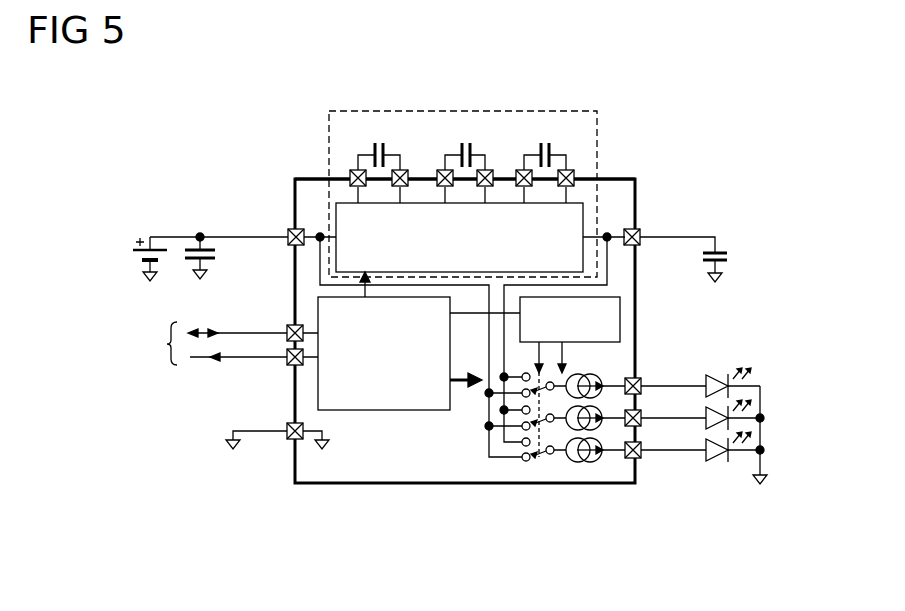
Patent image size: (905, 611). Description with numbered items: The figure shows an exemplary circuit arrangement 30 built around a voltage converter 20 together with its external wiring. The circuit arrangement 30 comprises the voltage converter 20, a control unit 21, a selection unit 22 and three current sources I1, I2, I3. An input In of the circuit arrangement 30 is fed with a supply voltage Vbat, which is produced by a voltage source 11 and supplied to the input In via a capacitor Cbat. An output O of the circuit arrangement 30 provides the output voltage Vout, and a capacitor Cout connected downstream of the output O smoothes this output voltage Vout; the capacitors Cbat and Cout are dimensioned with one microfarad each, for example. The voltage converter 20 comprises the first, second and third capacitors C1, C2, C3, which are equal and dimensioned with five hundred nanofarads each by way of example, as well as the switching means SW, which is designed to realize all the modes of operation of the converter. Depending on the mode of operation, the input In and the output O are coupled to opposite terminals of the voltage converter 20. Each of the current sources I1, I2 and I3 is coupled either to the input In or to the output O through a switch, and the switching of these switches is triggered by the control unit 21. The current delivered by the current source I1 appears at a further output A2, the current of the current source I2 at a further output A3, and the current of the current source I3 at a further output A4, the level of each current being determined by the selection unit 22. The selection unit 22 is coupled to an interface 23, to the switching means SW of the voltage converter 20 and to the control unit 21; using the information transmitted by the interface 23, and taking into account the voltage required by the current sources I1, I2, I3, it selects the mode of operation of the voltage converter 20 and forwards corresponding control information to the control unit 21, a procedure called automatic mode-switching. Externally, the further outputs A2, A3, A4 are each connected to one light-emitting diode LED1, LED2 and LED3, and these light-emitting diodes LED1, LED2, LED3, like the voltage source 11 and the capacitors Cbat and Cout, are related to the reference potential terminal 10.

The reference potential terminal 10 is at (151, 280).
The voltage source 11 is at (132, 249).
The voltage converter 20 is at (485, 194).
The control unit 21 is at (619, 306).
The selection unit 22 is at (318, 394).
The interface 23 is at (220, 343).
The circuit arrangement 30 is at (406, 506).
The switching means SW is at (575, 210).
The output O is at (632, 228).
The input In is at (290, 229).
The first capacitor C1 is at (379, 144).
The second capacitor C2 is at (465, 144).
The third capacitor C3 is at (545, 144).
The supply voltage Vbat is at (219, 226).
The capacitor Cbat is at (224, 253).
The output voltage Vout is at (677, 233).
The capacitor Cout is at (718, 252).
The current source I1 is at (576, 376).
The current source I2 is at (593, 408).
The current source I3 is at (587, 464).
The further output A2 is at (634, 378).
The further output A3 is at (640, 430).
The further output A4 is at (640, 460).
The light-emitting diode LED1 is at (700, 380).
The light-emitting diode LED2 is at (700, 412).
The light-emitting diode LED3 is at (700, 443).